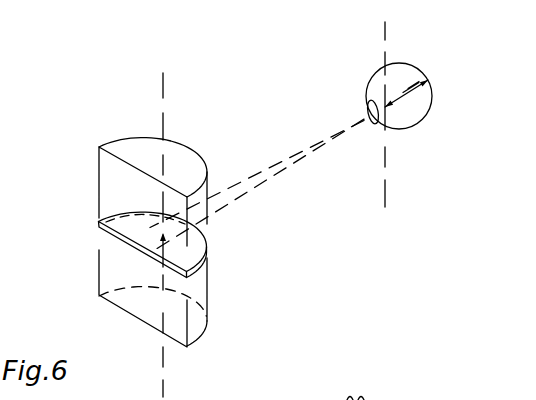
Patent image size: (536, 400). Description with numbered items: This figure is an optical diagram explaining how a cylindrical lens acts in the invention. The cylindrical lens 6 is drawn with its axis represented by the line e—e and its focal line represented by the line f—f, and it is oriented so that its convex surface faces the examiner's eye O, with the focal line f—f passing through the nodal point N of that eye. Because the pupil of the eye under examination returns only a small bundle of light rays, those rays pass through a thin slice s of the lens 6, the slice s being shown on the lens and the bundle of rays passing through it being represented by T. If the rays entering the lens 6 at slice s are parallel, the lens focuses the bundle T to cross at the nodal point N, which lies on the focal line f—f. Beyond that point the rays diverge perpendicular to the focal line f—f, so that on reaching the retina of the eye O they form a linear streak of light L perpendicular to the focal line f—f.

The cylindrical lens 6 is at (110, 141).
The slice s is at (120, 244).
The bundle of light rays T is at (146, 257).
The examiner's eye O is at (404, 65).
The linear streak of light L is at (432, 79).
The nodal point N is at (387, 109).
The axis of the lens e is at (155, 232).
The focal line f is at (378, 133).